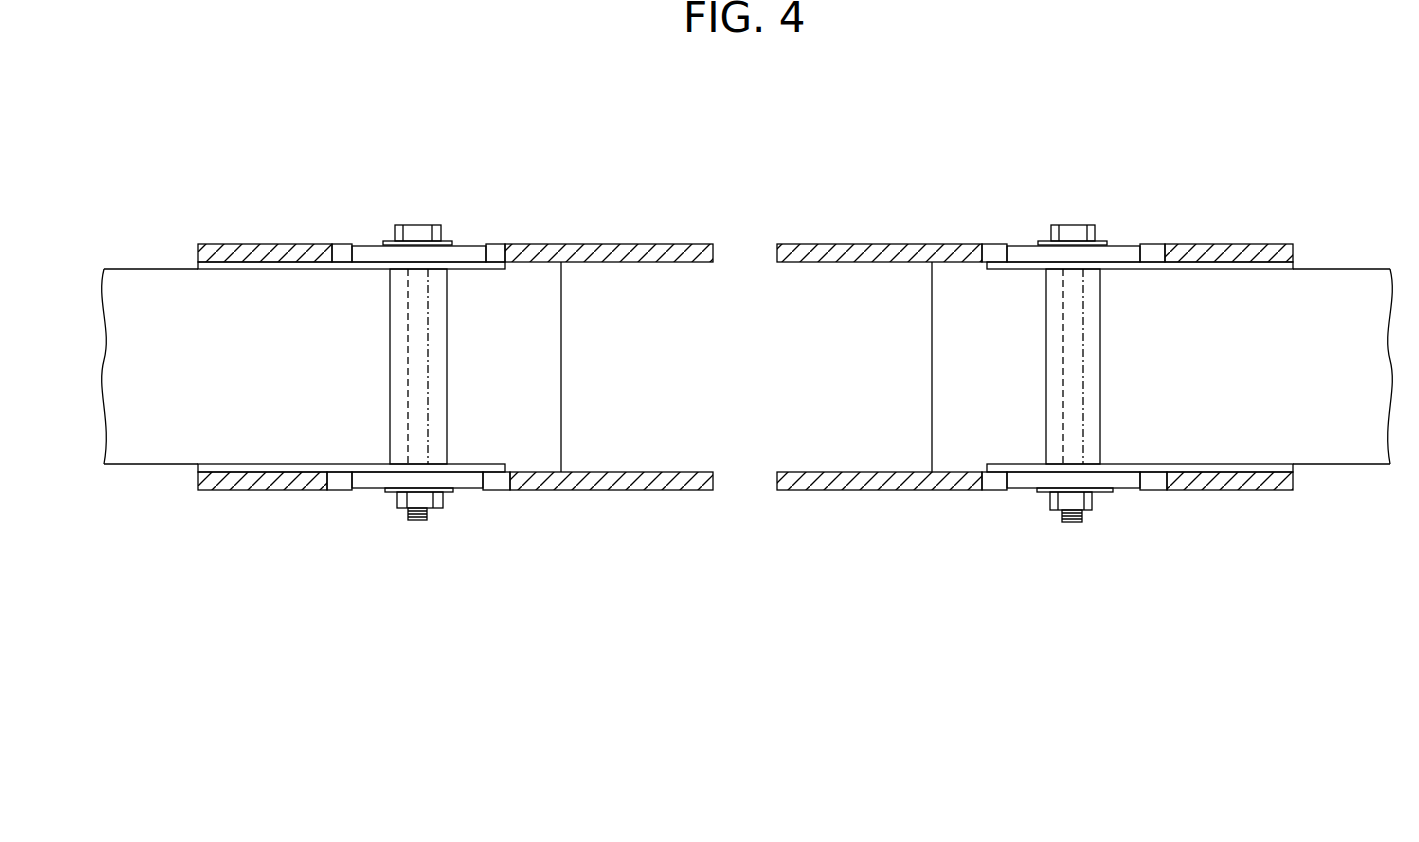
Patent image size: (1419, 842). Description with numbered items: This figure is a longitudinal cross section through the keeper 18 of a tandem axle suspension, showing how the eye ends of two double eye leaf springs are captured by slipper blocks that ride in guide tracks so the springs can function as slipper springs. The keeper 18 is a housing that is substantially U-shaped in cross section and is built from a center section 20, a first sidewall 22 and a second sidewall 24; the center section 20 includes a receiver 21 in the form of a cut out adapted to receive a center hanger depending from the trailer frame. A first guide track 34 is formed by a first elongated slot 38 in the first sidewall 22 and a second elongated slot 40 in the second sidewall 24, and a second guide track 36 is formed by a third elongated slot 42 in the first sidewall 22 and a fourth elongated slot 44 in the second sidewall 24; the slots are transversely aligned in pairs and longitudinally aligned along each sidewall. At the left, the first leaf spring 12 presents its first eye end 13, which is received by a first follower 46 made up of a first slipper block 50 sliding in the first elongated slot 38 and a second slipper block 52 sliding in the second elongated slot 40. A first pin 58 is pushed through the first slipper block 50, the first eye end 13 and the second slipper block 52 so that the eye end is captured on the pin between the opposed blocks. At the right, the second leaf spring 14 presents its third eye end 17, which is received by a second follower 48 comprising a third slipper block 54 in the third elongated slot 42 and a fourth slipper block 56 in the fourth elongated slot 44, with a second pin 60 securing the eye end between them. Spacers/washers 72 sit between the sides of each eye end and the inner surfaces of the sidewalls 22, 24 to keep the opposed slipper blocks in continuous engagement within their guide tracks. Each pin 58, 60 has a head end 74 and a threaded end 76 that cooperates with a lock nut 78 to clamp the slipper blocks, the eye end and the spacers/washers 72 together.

The first leaf spring 12 is at (168, 445).
The first eye end 13 is at (442, 365).
The second leaf spring 14 is at (1308, 438).
The third eye end 17 is at (1052, 368).
The keeper 18 is at (842, 243).
The center section 20 is at (510, 395).
The receiver 21 is at (655, 428).
The first sidewall 22 is at (663, 243).
The second sidewall 24 is at (672, 492).
The first guide track 34 is at (333, 253).
The second guide track 36 is at (990, 253).
The first elongated slot 38 is at (360, 222).
The second elongated slot 40 is at (418, 481).
The third elongated slot 42 is at (1044, 216).
The fourth elongated slot 44 is at (1025, 509).
The first follower 46 is at (463, 253).
The second follower 48 is at (1117, 253).
The first slipper block 50 is at (468, 209).
The second slipper block 52 is at (375, 510).
The third slipper block 54 is at (1123, 208).
The fourth slipper block 56 is at (1049, 528).
The first pin 58 is at (412, 228).
The second pin 60 is at (1070, 228).
The spacer/washer 72 is at (497, 262).
The head end 74 is at (724, 187).
The threaded end 76 is at (420, 523).
The lock nut 78 is at (395, 498).